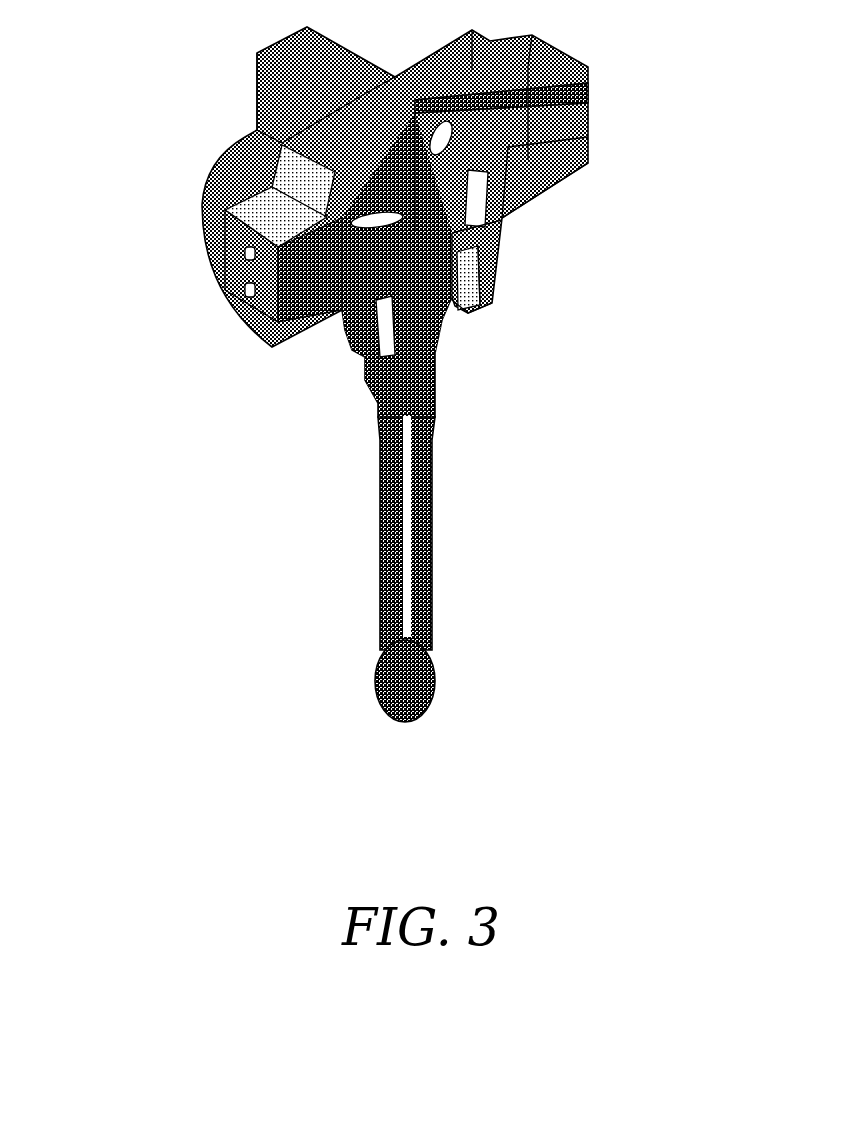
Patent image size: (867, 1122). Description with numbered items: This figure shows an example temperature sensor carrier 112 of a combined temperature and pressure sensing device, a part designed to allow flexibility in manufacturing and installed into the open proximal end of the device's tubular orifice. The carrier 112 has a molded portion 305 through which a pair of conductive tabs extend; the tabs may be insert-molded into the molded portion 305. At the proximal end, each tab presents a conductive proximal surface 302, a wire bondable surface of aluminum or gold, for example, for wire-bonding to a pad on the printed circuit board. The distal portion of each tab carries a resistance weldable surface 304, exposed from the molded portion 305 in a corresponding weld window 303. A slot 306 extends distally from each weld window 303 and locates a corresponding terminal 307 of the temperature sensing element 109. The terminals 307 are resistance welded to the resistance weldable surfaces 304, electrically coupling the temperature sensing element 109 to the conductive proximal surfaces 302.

The temperature sensor carrier 112 is at (183, 212).
The conductive proximal surface 302 is at (590, 83).
The weld window 303 is at (590, 137).
The molded portion 305 is at (565, 172).
The resistance weldable surface 304 is at (503, 200).
The slot 306 is at (492, 307).
The terminal 307 is at (375, 557).
The temperature sensing element 109 is at (433, 682).